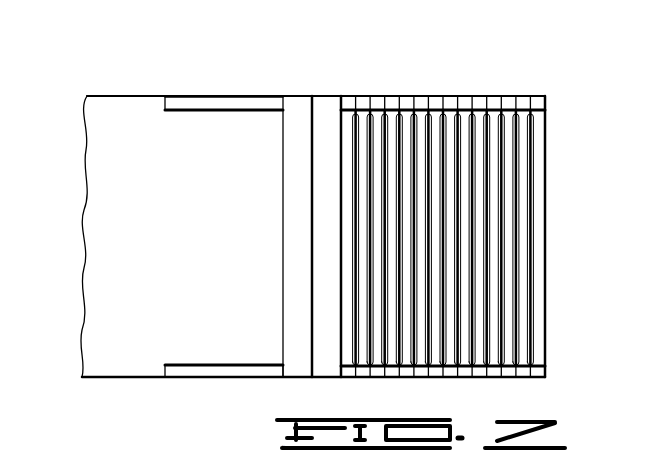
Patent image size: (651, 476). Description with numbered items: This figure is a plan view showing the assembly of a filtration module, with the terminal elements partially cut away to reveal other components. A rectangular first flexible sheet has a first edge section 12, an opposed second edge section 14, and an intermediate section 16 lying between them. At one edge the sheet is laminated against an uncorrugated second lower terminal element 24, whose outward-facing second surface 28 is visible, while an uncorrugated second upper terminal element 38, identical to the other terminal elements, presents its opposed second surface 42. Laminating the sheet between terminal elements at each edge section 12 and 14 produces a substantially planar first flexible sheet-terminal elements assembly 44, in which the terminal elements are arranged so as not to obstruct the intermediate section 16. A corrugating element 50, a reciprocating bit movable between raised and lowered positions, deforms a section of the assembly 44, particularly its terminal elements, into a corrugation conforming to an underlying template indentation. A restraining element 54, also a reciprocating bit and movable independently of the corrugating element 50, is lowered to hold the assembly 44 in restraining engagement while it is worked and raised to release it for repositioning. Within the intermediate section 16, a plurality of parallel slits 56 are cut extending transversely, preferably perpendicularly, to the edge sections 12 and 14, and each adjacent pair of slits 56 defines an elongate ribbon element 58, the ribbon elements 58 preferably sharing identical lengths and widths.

The first edge section 12 is at (93, 363).
The second edge section 14 is at (122, 103).
The intermediate section 16 is at (125, 185).
The second lower terminal element 24 is at (205, 373).
The second surface 28 is at (258, 373).
The second upper terminal element 38 is at (193, 102).
The second surface 42 is at (175, 102).
The first flexible sheet-terminal elements assembly 44 is at (240, 92).
The corrugating element 50 is at (295, 105).
The restraining element 54 is at (325, 105).
The slits 56 is at (400, 345).
The ribbon element 58 is at (538, 120).